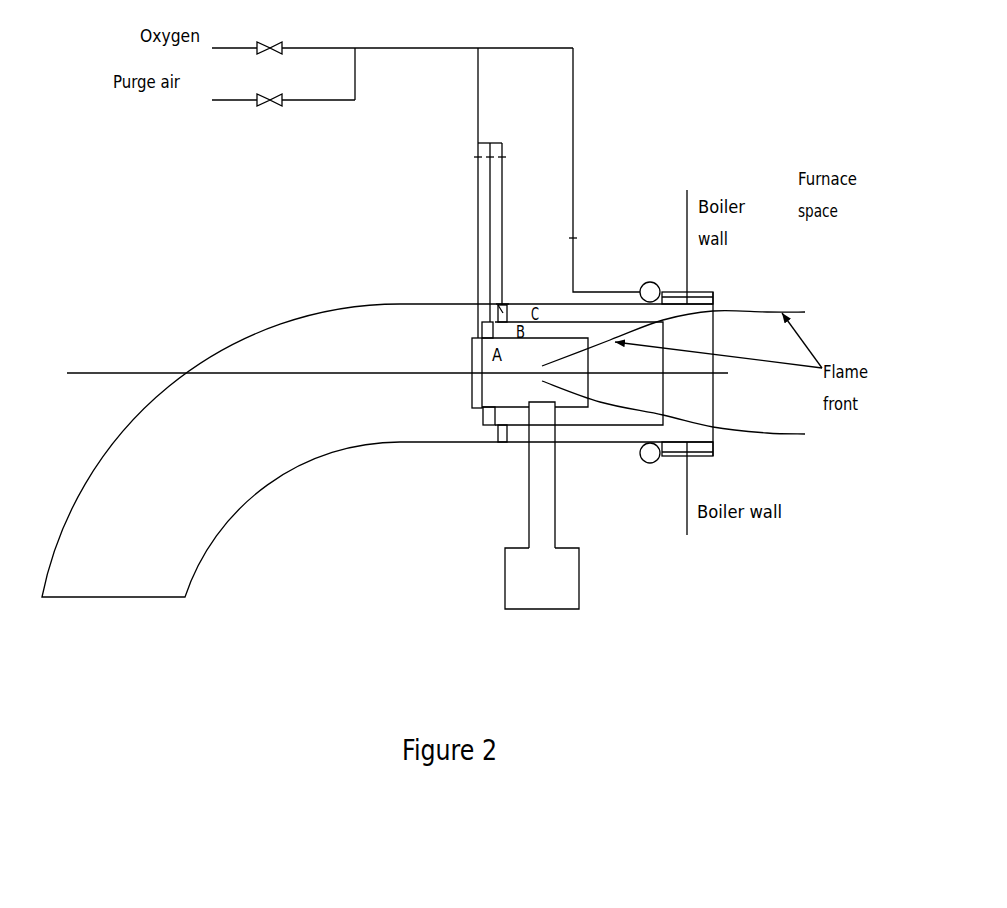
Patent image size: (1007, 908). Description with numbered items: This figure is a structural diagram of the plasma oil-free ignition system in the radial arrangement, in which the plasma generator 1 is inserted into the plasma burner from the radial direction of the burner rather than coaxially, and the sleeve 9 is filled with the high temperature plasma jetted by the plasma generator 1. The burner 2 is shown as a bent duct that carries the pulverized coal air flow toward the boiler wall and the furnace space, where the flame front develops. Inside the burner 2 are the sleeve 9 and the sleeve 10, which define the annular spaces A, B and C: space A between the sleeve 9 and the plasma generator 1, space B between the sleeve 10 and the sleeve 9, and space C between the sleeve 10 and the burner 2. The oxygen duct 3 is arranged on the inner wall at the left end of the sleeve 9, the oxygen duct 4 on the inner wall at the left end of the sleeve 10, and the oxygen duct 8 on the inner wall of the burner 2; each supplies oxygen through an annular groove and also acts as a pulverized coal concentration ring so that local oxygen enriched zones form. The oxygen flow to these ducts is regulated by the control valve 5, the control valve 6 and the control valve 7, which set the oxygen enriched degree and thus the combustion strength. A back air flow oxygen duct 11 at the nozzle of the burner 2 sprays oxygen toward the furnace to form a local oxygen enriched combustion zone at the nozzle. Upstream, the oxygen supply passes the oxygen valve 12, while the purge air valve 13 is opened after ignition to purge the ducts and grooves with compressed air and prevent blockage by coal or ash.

The plasma generator 1 is at (522, 600).
The burner 2 is at (343, 307).
The oxygen duct 3 is at (478, 288).
The oxygen duct 4 is at (488, 240).
The control valve 5 is at (478, 155).
The control valve 6 is at (490, 155).
The control valve 7 is at (503, 158).
The oxygen duct 8 is at (505, 293).
The sleeve 9 is at (479, 410).
The sleeve 10 is at (522, 425).
The back air flow oxygen duct 11 is at (573, 275).
The oxygen valve 12 is at (280, 35).
The purge air valve 13 is at (281, 89).